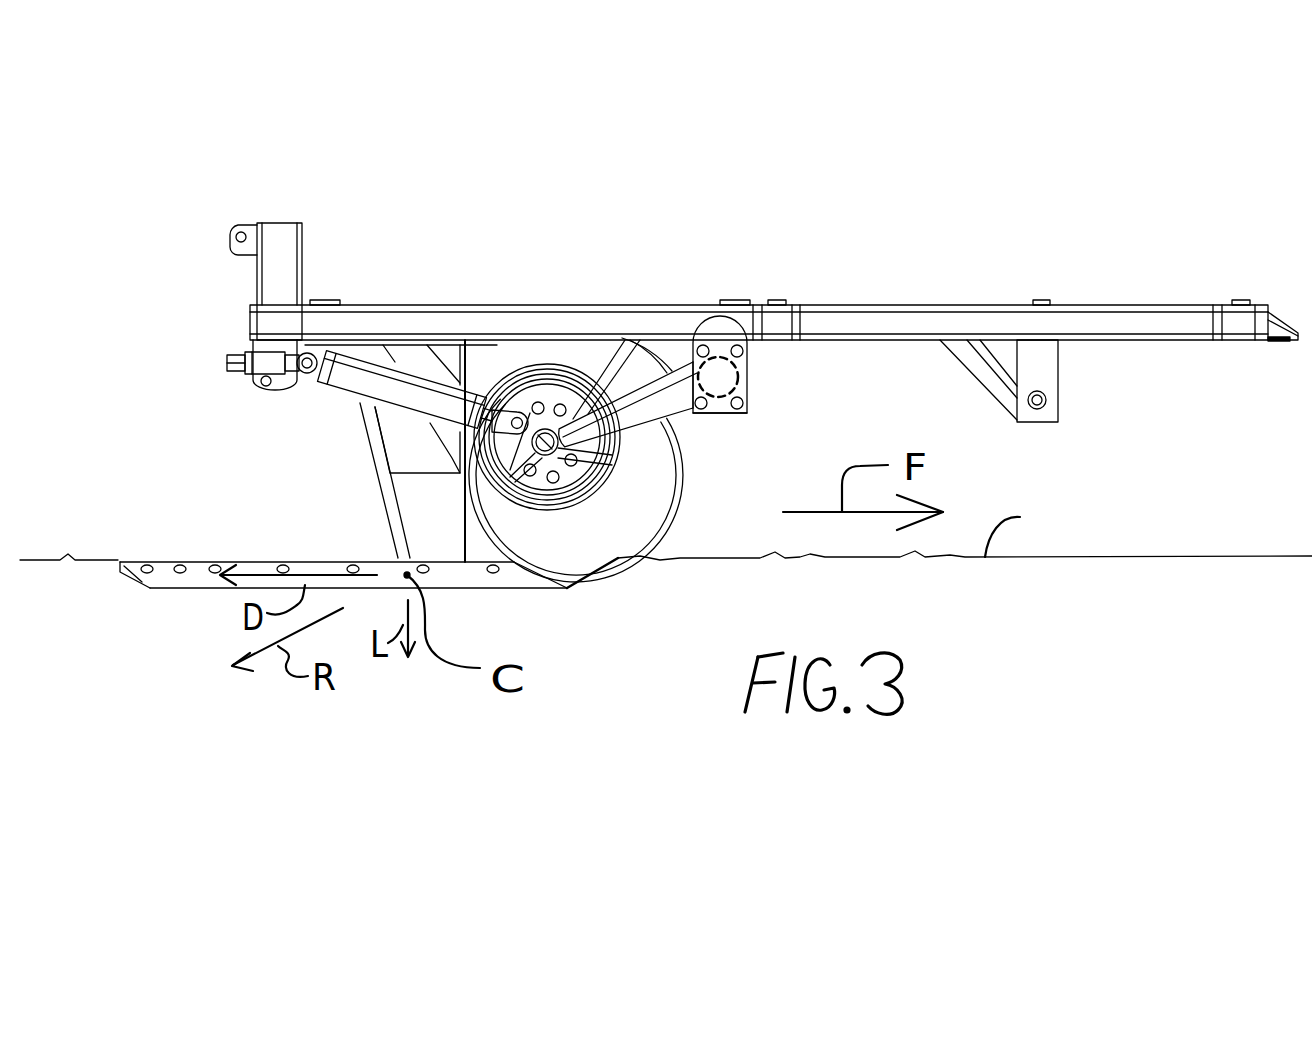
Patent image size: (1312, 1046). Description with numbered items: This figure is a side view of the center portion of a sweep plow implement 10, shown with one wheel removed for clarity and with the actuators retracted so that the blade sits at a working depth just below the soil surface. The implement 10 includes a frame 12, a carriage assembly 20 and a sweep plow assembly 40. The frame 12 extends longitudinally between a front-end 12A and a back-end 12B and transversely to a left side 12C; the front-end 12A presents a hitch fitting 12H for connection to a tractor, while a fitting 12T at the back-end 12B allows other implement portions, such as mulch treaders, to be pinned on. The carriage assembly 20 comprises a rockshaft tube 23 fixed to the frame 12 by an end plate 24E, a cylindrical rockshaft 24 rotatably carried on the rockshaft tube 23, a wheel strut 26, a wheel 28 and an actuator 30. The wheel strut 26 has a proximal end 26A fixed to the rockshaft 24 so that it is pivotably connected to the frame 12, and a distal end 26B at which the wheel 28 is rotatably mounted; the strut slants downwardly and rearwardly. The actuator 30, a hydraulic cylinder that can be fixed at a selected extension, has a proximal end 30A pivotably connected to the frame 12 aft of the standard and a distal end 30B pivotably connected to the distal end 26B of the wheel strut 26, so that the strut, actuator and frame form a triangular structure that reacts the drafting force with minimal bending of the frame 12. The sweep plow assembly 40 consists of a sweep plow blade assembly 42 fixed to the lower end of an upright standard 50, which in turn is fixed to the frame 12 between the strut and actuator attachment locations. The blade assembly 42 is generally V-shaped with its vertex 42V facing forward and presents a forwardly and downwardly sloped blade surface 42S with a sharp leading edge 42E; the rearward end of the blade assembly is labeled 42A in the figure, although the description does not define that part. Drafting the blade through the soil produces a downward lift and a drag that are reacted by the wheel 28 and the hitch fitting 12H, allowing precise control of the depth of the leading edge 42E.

The sweep plow implement 10 is at (730, 213).
The frame 12 is at (915, 290).
The front-end 12A is at (1289, 297).
The back-end 12B is at (232, 322).
The left side 12C is at (982, 290).
The hitch fitting 12H is at (1278, 347).
The fitting 12T is at (263, 385).
The carriage assembly 20 is at (700, 442).
The rockshaft tube 23 is at (733, 382).
The rockshaft 24 is at (715, 355).
The end plate 24E is at (748, 397).
The wheel strut 26 is at (656, 412).
The proximal end 26A is at (680, 350).
The distal end 26B is at (555, 413).
The wheel 28 is at (570, 558).
The actuator 30 is at (335, 406).
The proximal end 30A is at (326, 362).
The distal end 30B is at (500, 413).
The sweep plow assembly 40 is at (358, 510).
The sweep plow blade assembly 42 is at (505, 607).
The plate end 42A is at (125, 578).
The leading edge 42E is at (558, 597).
The blade surface 42S is at (453, 573).
The vertex 42V is at (633, 558).
The standard 50 is at (458, 514).